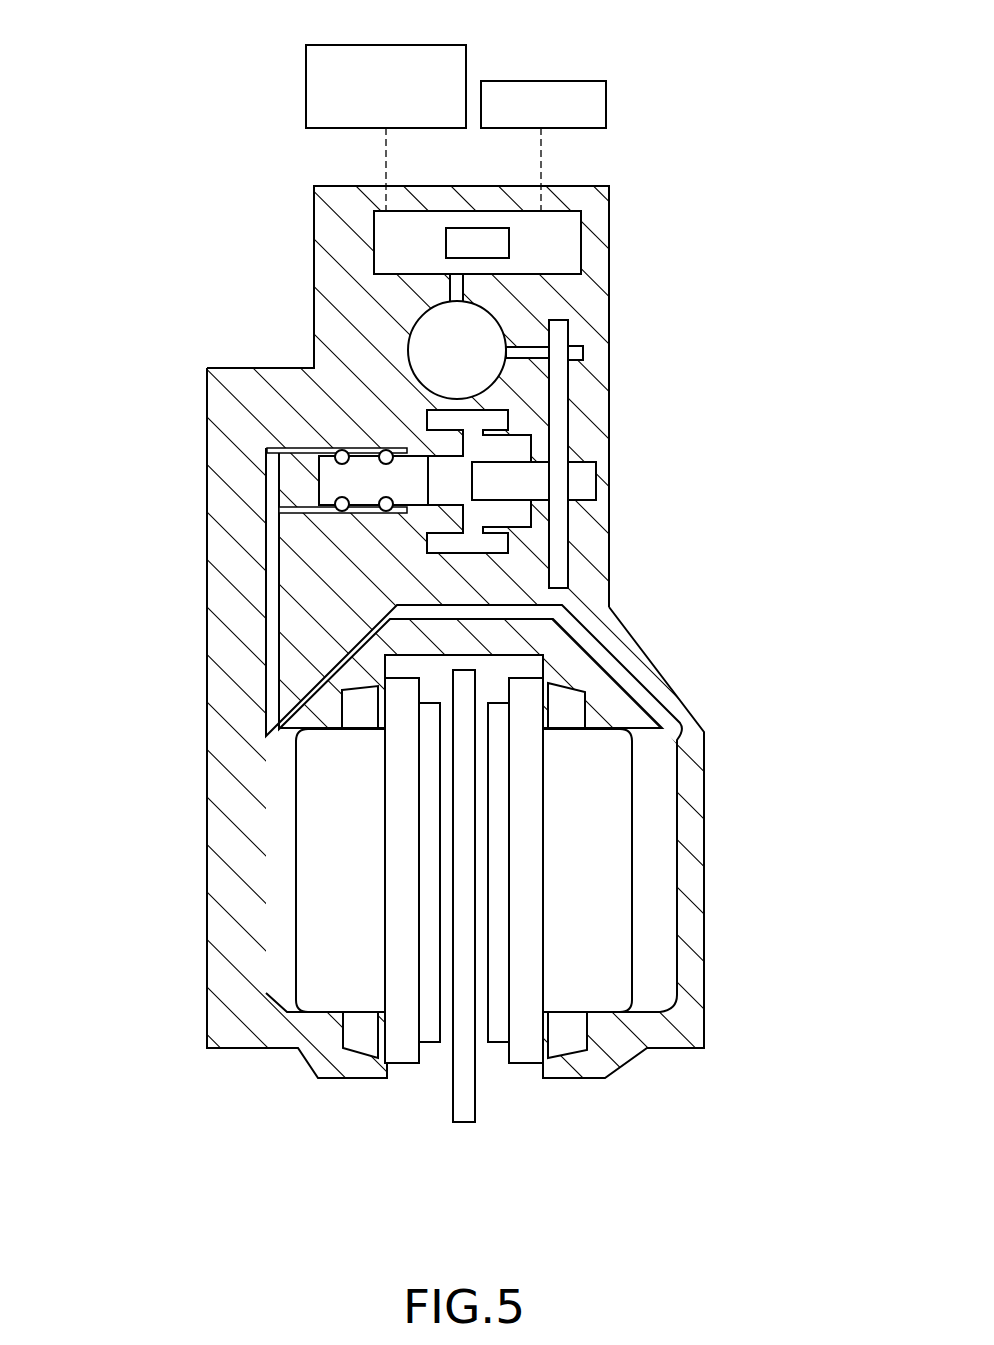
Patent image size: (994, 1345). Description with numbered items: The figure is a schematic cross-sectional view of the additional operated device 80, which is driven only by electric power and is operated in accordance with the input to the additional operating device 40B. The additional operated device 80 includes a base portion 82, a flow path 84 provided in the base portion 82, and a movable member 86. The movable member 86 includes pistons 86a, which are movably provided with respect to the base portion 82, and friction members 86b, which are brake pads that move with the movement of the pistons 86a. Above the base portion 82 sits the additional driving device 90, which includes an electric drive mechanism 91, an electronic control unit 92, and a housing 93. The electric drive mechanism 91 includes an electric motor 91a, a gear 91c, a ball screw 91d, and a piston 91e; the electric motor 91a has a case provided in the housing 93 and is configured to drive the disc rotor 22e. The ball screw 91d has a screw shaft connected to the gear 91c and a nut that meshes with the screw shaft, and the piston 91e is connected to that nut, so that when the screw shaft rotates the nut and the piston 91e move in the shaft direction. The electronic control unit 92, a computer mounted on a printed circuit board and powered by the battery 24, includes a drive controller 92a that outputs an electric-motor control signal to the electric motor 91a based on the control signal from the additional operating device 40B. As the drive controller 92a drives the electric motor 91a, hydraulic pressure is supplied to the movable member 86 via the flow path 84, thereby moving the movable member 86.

The additional operated device 80 is at (235, 99).
The base portion 82 is at (207, 637).
The flow path 84 is at (276, 757).
The movable member 86 is at (462, 967).
The pistons 86a is at (332, 897).
The friction members 86b is at (432, 1035).
The disc rotor 22e is at (467, 1124).
The additional driving device 90 is at (643, 223).
The electric drive mechanism 91 is at (550, 308).
The electric motor 91a is at (427, 345).
The gear 91c is at (557, 450).
The ball screw 91d is at (509, 516).
The piston 91e is at (358, 492).
The electronic control unit 92 is at (573, 207).
The drive controller 92a is at (509, 242).
The housing 93 is at (314, 207).
The additional operating device 40B is at (418, 45).
The battery 24 is at (567, 81).